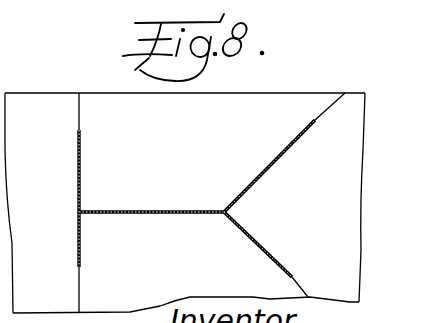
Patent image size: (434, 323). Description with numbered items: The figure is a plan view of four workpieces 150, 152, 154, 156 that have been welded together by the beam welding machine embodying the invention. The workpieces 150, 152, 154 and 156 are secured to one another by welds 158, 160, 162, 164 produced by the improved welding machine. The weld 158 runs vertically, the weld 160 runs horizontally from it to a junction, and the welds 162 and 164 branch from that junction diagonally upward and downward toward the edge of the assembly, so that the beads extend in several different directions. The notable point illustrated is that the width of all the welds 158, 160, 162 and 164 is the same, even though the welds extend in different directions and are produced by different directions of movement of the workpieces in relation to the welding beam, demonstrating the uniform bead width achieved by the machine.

The workpiece 150 is at (38, 100).
The workpiece 152 is at (247, 97).
The workpiece 154 is at (350, 103).
The workpiece 156 is at (163, 277).
The weld 158 is at (80, 157).
The weld 160 is at (128, 212).
The weld 162 is at (262, 175).
The weld 164 is at (252, 240).